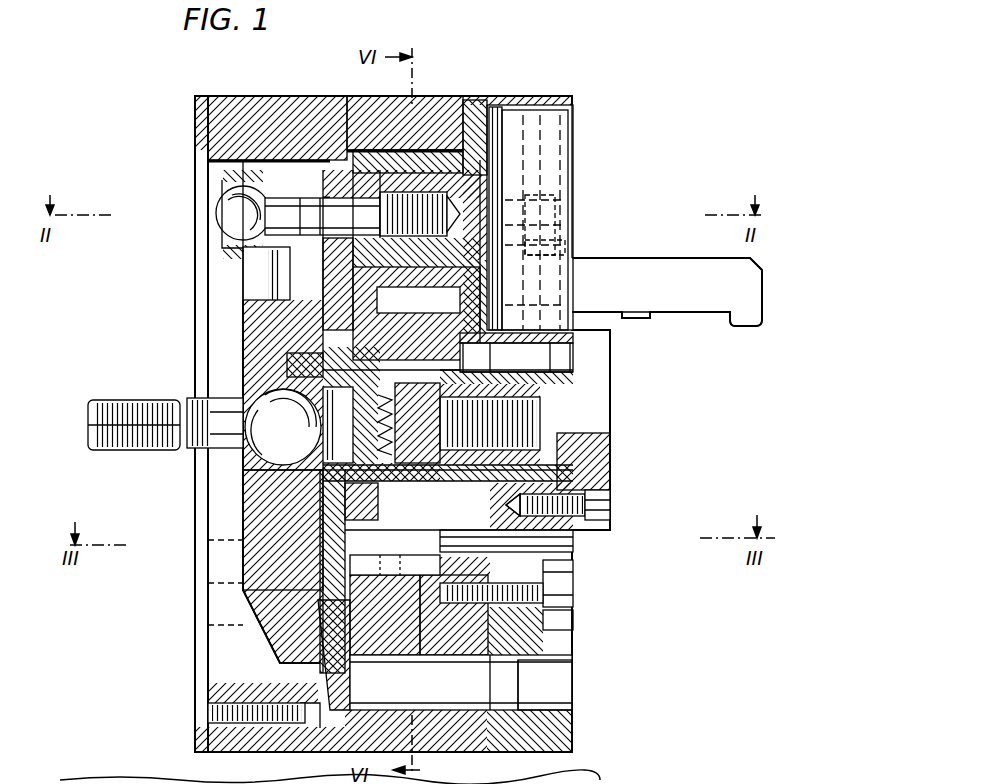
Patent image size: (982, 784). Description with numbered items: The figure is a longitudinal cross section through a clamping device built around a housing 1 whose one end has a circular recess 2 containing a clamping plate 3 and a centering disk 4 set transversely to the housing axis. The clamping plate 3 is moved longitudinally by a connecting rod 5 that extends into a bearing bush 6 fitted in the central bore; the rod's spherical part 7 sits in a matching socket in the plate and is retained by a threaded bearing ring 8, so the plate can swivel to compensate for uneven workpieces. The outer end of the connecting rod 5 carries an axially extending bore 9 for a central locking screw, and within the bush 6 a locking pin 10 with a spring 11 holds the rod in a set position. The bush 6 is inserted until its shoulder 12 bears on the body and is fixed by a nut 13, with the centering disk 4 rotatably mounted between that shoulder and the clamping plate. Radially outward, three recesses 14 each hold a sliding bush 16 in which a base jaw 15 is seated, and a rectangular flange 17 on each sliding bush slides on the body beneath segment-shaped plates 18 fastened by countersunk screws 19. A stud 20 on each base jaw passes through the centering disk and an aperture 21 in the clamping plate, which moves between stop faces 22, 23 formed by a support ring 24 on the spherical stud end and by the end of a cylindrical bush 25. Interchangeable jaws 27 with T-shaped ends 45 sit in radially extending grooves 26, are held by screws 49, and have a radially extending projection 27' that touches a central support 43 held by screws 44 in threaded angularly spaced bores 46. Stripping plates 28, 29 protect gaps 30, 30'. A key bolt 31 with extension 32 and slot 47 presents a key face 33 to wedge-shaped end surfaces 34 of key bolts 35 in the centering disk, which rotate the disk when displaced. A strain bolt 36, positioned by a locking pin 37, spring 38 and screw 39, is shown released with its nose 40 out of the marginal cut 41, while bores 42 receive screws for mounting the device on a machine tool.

The housing 1 is at (230, 98).
The circular recess 2 is at (212, 477).
The clamping plate 3 is at (243, 542).
The centering disk 4 is at (320, 578).
The connecting rod 5 is at (96, 422).
The bearing bush 6 is at (575, 472).
The spherical part 7 is at (276, 376).
The bearing ring 8 is at (295, 484).
The axially extending bore 9 is at (530, 420).
The locking pin 10 is at (417, 423).
The spring 11 is at (360, 501).
The shoulder 12 is at (416, 313).
The nut 13 is at (440, 472).
The recesses 14 is at (425, 290).
The base jaw 15 is at (555, 172).
The sliding bush 16 is at (405, 158).
The rectangular flange 17 is at (470, 110).
The segment-shaped plates 18 is at (566, 626).
The countersunk screws 19 is at (570, 586).
The stud 20 is at (228, 214).
The aperture 21 is at (283, 263).
The stop face 22 is at (272, 172).
The stop face 23 is at (318, 265).
The support ring 24 is at (228, 160).
The cylindrical bush 25 is at (342, 170).
The radially extending grooves 26 is at (573, 118).
The interchangeable jaws 27 is at (667, 278).
The radially extending projection 27' is at (667, 323).
The stripping plate 28 is at (496, 125).
The stripping plate 29 is at (560, 352).
The gap 30 is at (538, 203).
The gap 30' is at (560, 373).
The key bolt 31 is at (450, 590).
The extension 32 is at (530, 605).
The key face 33 is at (410, 575).
The inclined end surfaces 34 is at (402, 562).
The key bolts 35 is at (318, 541).
The strain bolt 36 is at (262, 752).
The locking pin 37 is at (310, 752).
The spring 38 is at (340, 735).
The screw 39 is at (225, 703).
The nose 40 is at (306, 655).
The marginal cut 41 is at (370, 683).
The bores 42 is at (568, 678).
The support 43 is at (605, 432).
The screws 44 is at (615, 503).
The T-shaped ends 45 is at (566, 210).
The angularly spaced bores 46 is at (501, 505).
The slot 47 is at (573, 544).
The screws 49 is at (560, 248).